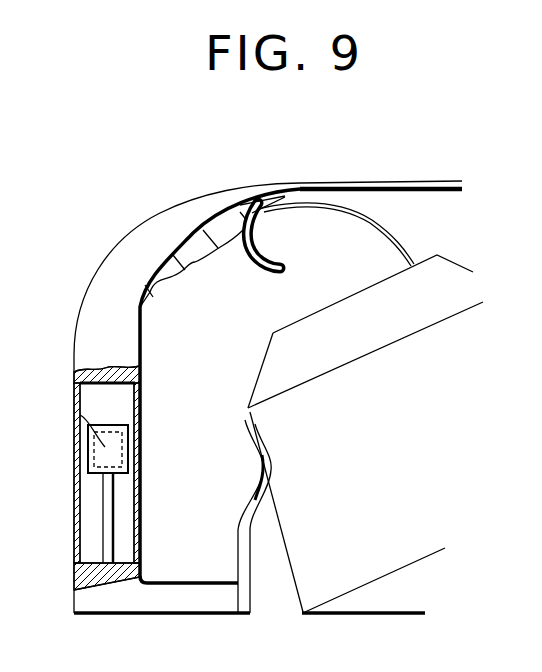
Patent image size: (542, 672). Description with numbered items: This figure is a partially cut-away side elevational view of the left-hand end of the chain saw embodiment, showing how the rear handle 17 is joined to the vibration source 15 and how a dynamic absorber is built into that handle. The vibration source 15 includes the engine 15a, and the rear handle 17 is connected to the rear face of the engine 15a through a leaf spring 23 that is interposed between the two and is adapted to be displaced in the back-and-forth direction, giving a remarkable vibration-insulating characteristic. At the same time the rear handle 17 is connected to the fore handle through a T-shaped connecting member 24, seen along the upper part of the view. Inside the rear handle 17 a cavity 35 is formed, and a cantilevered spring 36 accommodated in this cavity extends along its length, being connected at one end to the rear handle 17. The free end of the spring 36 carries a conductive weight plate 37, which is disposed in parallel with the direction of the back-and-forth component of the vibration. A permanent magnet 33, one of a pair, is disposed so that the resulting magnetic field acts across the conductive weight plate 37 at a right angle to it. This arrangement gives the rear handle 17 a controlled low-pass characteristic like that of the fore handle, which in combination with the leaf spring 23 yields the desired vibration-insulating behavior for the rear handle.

The vibration source 15 is at (410, 552).
The engine 15a is at (280, 418).
The rear handle 17 is at (92, 321).
The leaf spring 23 is at (247, 534).
The T-shaped connecting member 24 is at (383, 187).
The permanent magnet 33 is at (80, 415).
The cavity 35 is at (95, 501).
The cantilevered spring 36 is at (108, 546).
The conductive weight plate 37 is at (128, 446).